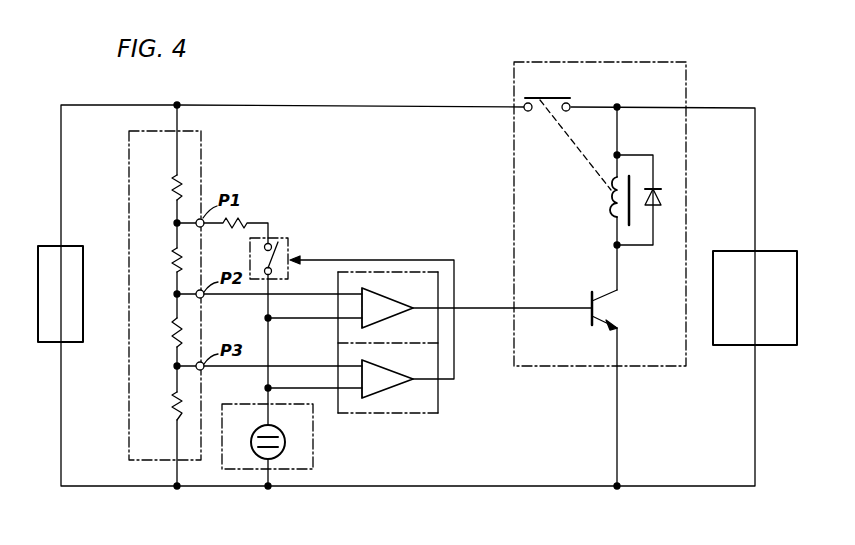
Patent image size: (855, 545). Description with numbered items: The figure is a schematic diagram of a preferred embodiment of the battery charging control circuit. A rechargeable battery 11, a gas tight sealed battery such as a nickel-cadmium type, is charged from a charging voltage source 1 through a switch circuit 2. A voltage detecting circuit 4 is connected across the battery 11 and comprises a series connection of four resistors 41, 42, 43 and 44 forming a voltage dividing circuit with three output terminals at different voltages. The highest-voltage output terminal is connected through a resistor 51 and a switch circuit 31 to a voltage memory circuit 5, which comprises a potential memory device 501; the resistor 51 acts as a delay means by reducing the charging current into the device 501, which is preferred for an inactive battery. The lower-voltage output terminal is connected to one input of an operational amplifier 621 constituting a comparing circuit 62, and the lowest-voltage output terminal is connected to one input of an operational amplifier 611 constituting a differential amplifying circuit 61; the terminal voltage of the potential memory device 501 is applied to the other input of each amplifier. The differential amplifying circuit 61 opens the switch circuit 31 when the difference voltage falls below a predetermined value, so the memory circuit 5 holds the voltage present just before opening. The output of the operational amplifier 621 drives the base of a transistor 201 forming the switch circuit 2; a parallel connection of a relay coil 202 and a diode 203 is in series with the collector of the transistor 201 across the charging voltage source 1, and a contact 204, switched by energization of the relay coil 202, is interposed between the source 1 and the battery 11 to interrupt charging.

The charging voltage source 1 is at (730, 340).
The switch circuit 2 is at (603, 274).
The voltage detecting circuit 4 is at (191, 295).
The voltage memory circuit 5 is at (285, 442).
The rechargeable battery 11 is at (82, 347).
The switch circuit 31 is at (290, 242).
The resistor 41 is at (173, 177).
The resistor 42 is at (172, 262).
The resistor 43 is at (172, 333).
The resistor 44 is at (172, 406).
The resistor 51 is at (244, 222).
The differential amplifying circuit 61 is at (401, 340).
The comparing circuit 62 is at (413, 284).
The transistor 201 is at (590, 297).
The relay coil 202 is at (612, 212).
The diode 203 is at (658, 200).
The contact 204 is at (566, 98).
The potential memory device 501 is at (278, 432).
The operational amplifier 611 is at (388, 376).
The operational amplifier 621 is at (398, 308).